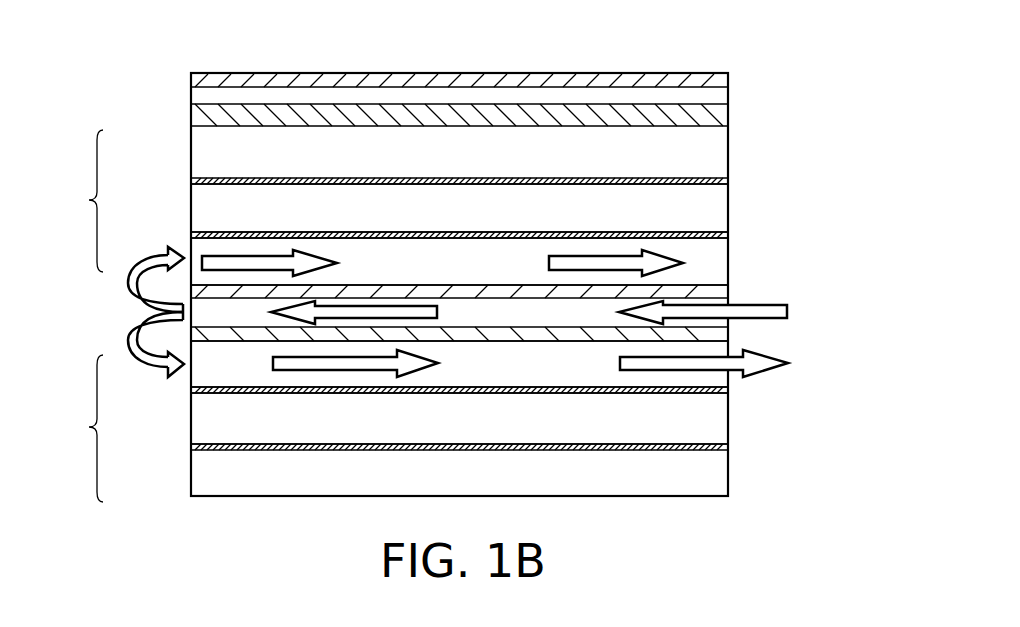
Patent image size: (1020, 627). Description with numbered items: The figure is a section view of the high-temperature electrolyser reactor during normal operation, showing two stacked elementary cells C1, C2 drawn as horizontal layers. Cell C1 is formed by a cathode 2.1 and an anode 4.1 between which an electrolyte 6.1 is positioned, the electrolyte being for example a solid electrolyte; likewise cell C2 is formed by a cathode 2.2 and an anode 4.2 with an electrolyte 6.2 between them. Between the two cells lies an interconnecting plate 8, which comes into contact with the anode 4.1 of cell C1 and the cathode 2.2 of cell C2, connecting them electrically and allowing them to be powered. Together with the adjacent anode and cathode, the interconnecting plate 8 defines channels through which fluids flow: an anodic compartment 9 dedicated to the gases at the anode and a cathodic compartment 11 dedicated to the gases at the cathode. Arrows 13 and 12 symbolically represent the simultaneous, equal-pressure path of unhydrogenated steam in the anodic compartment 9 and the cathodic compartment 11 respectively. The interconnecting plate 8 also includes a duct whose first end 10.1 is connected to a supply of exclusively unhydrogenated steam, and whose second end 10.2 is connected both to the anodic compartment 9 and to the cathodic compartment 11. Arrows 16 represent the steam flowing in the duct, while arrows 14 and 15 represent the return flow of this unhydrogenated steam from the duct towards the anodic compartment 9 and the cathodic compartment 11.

The interconnecting plate 8 is at (743, 235).
The cathode 2.1 is at (191, 180).
The electrolyte 6.1 is at (207, 213).
The anode 4.1 is at (191, 236).
The anodic compartment 9 is at (474, 272).
The arrow 13 is at (252, 263).
The first end of duct 10.1 is at (722, 303).
The second end of duct 10.2 is at (205, 311).
The arrow 16 is at (390, 315).
The cathodic compartment 11 is at (534, 379).
The arrow 12 is at (343, 365).
The cathode 2.2 is at (191, 392).
The electrolyte 6.2 is at (713, 420).
The anode 4.2 is at (191, 446).
The arrow 15 is at (130, 281).
The arrow 14 is at (130, 346).
The elementary cell C1 is at (79, 201).
The elementary cell C2 is at (76, 428).